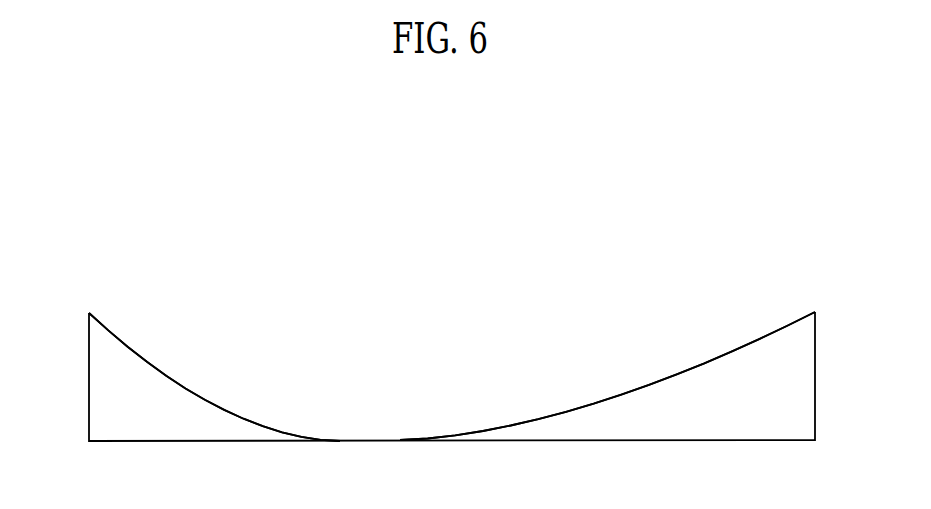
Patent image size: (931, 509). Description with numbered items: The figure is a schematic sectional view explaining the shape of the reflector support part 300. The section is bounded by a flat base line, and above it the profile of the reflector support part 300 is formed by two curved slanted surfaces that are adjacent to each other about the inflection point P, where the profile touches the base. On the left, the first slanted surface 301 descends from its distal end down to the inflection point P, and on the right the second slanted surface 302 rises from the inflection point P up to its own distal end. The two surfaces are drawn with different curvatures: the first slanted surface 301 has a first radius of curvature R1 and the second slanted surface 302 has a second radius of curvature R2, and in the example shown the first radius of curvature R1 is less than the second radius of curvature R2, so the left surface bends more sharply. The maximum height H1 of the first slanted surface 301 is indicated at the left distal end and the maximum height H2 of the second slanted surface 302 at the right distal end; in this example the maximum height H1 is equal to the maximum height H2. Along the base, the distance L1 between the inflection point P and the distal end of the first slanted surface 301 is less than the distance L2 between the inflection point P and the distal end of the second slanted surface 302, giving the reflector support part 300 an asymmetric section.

The reflector support part 300 is at (792, 347).
The first slanted surface 301 is at (115, 338).
The second slanted surface 302 is at (743, 347).
The first radius of curvature R1 is at (196, 386).
The second radius of curvature R2 is at (616, 390).
The inflection point P is at (356, 487).
The maximum height of the first slanted surface H1 is at (88, 313).
The maximum height of the second slanted surface H2 is at (816, 312).
The distance between the inflection point and the distal end of the first slanted su L1 is at (356, 462).
The distance between the inflection point and the distal end of the second slanted s L2 is at (815, 446).